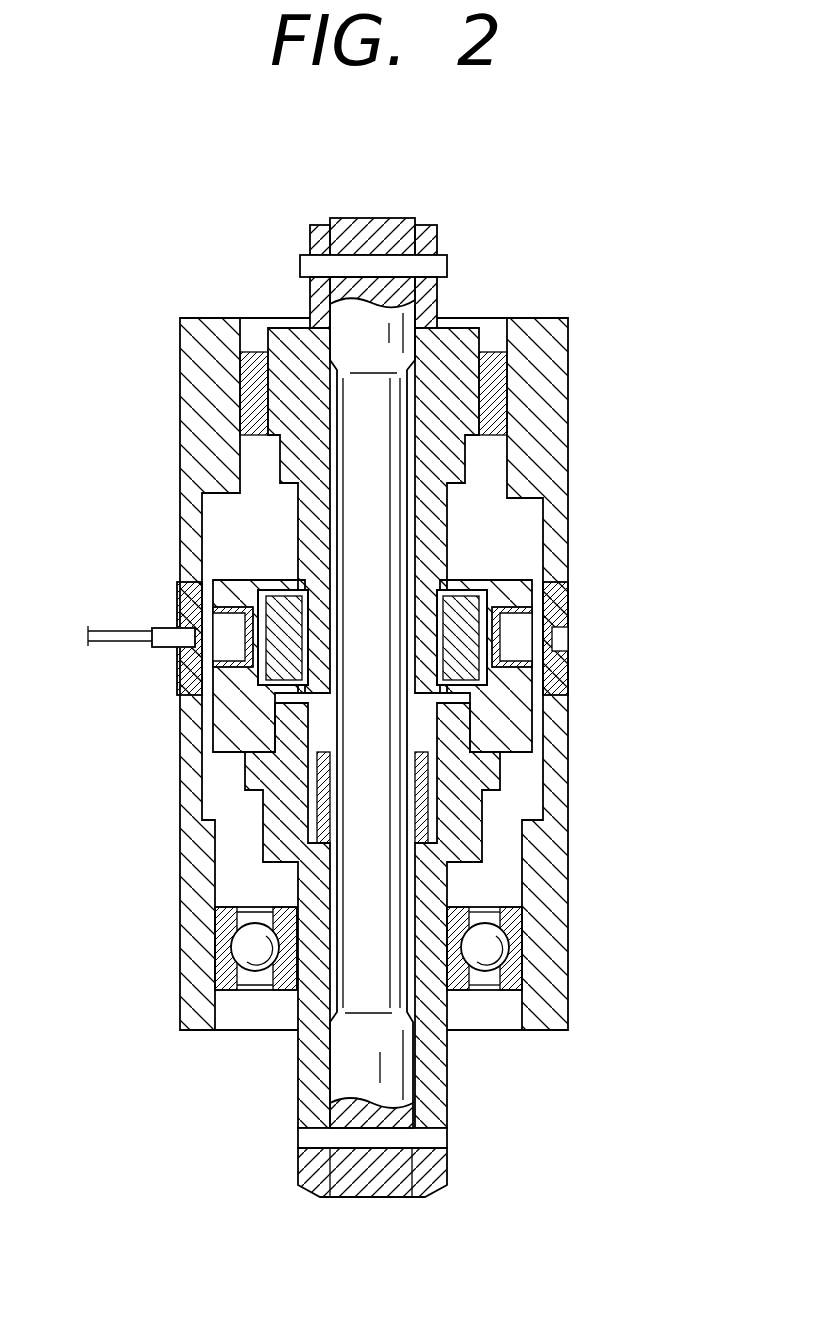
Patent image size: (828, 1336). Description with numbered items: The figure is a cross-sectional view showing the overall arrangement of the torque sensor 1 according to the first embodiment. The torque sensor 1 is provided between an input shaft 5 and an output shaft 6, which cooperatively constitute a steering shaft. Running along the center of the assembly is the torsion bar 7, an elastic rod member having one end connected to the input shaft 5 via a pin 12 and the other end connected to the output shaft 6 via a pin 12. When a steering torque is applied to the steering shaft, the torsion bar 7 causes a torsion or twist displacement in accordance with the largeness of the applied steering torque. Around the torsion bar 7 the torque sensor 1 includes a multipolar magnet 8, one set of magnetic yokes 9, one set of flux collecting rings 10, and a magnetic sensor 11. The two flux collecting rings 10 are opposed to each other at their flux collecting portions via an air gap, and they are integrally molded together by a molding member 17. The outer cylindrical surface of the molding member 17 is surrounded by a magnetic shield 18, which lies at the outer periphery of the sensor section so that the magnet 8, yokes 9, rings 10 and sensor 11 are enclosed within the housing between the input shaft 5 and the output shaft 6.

The torque sensor 1 is at (599, 376).
The input shaft 5 is at (453, 343).
The output shaft 6 is at (432, 1073).
The torsion bar 7 is at (385, 523).
The multipolar magnet 8 is at (467, 643).
The magnetic yokes 9 is at (513, 603).
The flux collecting rings 10 is at (557, 681).
The magnetic sensor 11 is at (160, 650).
The pin 12 is at (375, 265).
The molding member 17 is at (560, 600).
The magnetic shield 18 is at (177, 600).